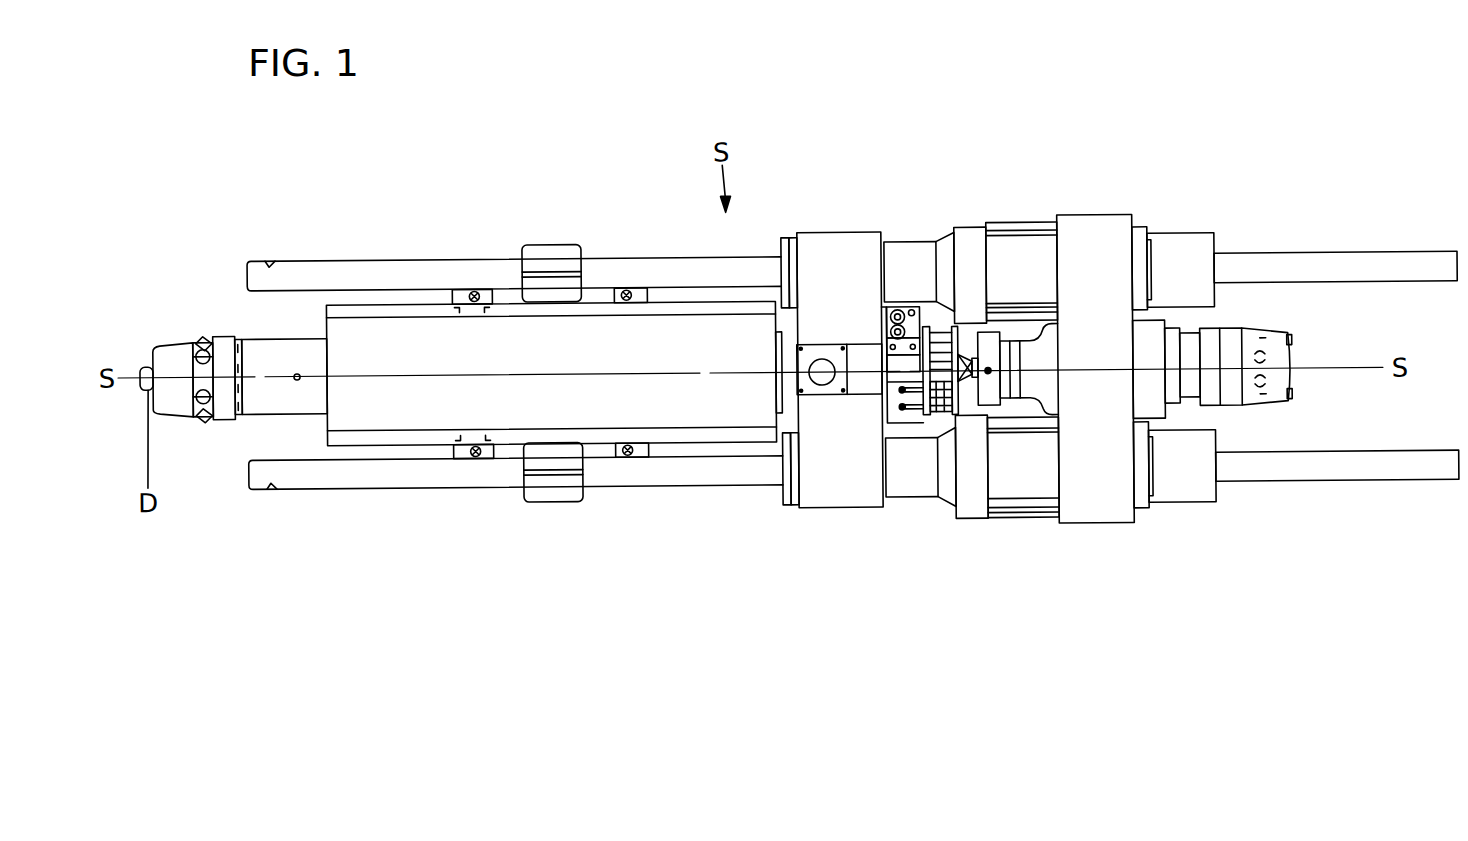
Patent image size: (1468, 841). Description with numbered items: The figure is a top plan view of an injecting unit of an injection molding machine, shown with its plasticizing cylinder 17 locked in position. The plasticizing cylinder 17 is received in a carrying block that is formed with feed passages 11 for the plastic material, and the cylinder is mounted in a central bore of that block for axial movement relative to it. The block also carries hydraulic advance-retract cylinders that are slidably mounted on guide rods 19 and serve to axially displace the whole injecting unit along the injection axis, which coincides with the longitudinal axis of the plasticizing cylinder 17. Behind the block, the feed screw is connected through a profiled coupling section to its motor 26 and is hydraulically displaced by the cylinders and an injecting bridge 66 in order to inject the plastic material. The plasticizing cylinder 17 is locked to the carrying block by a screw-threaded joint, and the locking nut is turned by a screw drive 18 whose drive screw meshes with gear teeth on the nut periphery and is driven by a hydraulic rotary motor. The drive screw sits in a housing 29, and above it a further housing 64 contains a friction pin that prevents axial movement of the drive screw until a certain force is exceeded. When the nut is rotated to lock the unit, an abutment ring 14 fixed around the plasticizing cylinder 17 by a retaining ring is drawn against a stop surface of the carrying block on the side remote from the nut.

The feed passages 11 is at (1024, 267).
The abutment ring 14 is at (787, 407).
The plasticizing cylinder 17 is at (262, 354).
The screw drive 18 is at (902, 314).
The guide rods 19 is at (365, 275).
The motor 26 is at (1278, 352).
The housing 29 is at (902, 374).
The housing 64 is at (905, 403).
The injecting bridge 66 is at (1093, 240).